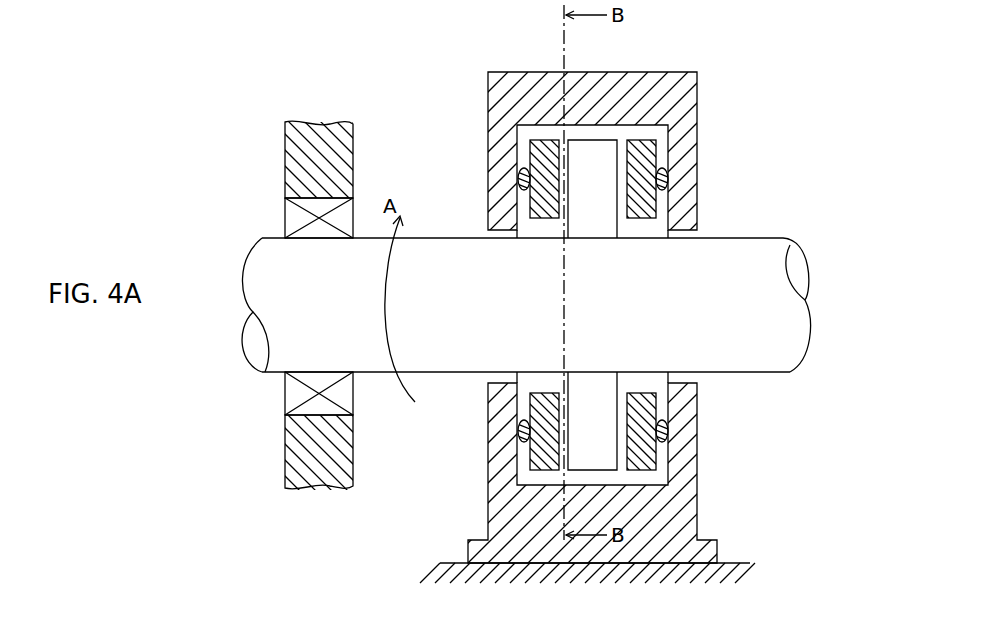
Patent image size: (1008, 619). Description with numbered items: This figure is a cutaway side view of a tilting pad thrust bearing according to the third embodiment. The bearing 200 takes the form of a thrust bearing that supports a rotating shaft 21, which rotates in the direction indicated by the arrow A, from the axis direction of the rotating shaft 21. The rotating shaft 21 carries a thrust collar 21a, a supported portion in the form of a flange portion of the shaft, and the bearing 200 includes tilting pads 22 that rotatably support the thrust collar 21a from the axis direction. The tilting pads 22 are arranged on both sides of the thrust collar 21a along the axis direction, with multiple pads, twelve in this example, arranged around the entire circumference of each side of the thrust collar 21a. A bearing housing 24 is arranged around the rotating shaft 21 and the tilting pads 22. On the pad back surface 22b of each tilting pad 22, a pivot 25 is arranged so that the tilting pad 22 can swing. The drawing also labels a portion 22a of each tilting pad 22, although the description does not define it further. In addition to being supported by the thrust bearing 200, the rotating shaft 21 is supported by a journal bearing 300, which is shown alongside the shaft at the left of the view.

The bearing 200 is at (740, 70).
The rotating shaft 21 is at (793, 333).
The thrust collar 21a is at (590, 147).
The tilting pads 22 is at (568, 128).
The magnet first end portion 22a is at (568, 140).
The pad back surface 22b is at (535, 200).
The bearing housing 24 is at (687, 102).
The pivot 25 is at (518, 178).
The journal bearing 300 is at (285, 458).